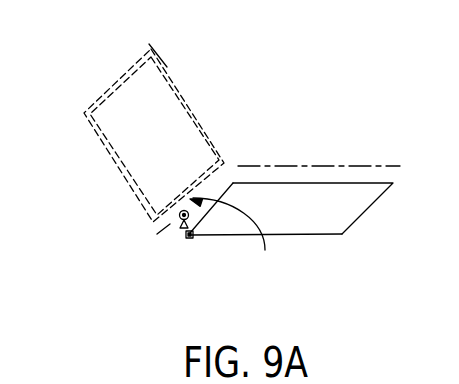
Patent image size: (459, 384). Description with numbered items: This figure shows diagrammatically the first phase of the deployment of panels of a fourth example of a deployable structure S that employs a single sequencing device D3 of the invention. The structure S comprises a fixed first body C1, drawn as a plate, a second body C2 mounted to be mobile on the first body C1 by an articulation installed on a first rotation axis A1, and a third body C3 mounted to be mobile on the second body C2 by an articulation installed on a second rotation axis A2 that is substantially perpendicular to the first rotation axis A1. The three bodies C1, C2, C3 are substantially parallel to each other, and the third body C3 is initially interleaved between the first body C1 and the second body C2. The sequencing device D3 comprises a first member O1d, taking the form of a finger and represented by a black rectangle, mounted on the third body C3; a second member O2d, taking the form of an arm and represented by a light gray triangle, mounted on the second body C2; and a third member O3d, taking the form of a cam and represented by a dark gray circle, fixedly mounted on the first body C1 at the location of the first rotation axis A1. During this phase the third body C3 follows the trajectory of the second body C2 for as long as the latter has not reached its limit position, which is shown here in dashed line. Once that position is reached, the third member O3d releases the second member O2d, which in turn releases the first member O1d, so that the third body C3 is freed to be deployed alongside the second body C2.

The second rotation axis A2 is at (166, 66).
The first rotation axis A1 is at (227, 163).
The structure S is at (308, 130).
The first body C1 is at (295, 259).
The second body C2 is at (285, 268).
The third body C3 is at (261, 274).
The sequencing device D3 is at (79, 226).
The first member O1d is at (186, 239).
The second member O2d is at (183, 233).
The third member O3d is at (180, 215).